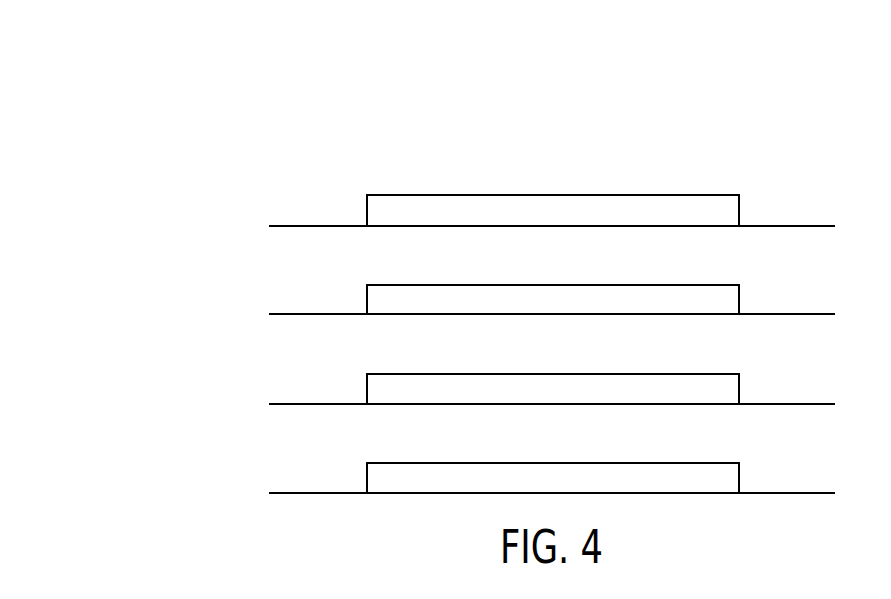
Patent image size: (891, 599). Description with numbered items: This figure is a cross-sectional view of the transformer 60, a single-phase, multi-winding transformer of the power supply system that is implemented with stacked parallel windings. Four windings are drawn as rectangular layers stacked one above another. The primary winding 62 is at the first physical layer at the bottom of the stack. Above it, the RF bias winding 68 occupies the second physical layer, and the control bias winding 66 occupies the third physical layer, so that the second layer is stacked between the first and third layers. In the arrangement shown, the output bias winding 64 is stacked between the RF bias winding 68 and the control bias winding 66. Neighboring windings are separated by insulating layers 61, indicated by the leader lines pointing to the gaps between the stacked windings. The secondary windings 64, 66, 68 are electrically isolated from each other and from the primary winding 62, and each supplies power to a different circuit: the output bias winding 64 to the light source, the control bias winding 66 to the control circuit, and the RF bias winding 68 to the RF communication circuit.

The transformer 60 is at (790, 108).
The insulating layers 61 is at (290, 463).
The primary winding 62 is at (740, 480).
The output bias winding 64 is at (740, 301).
The control bias winding 66 is at (740, 212).
The RF bias winding 68 is at (740, 391).